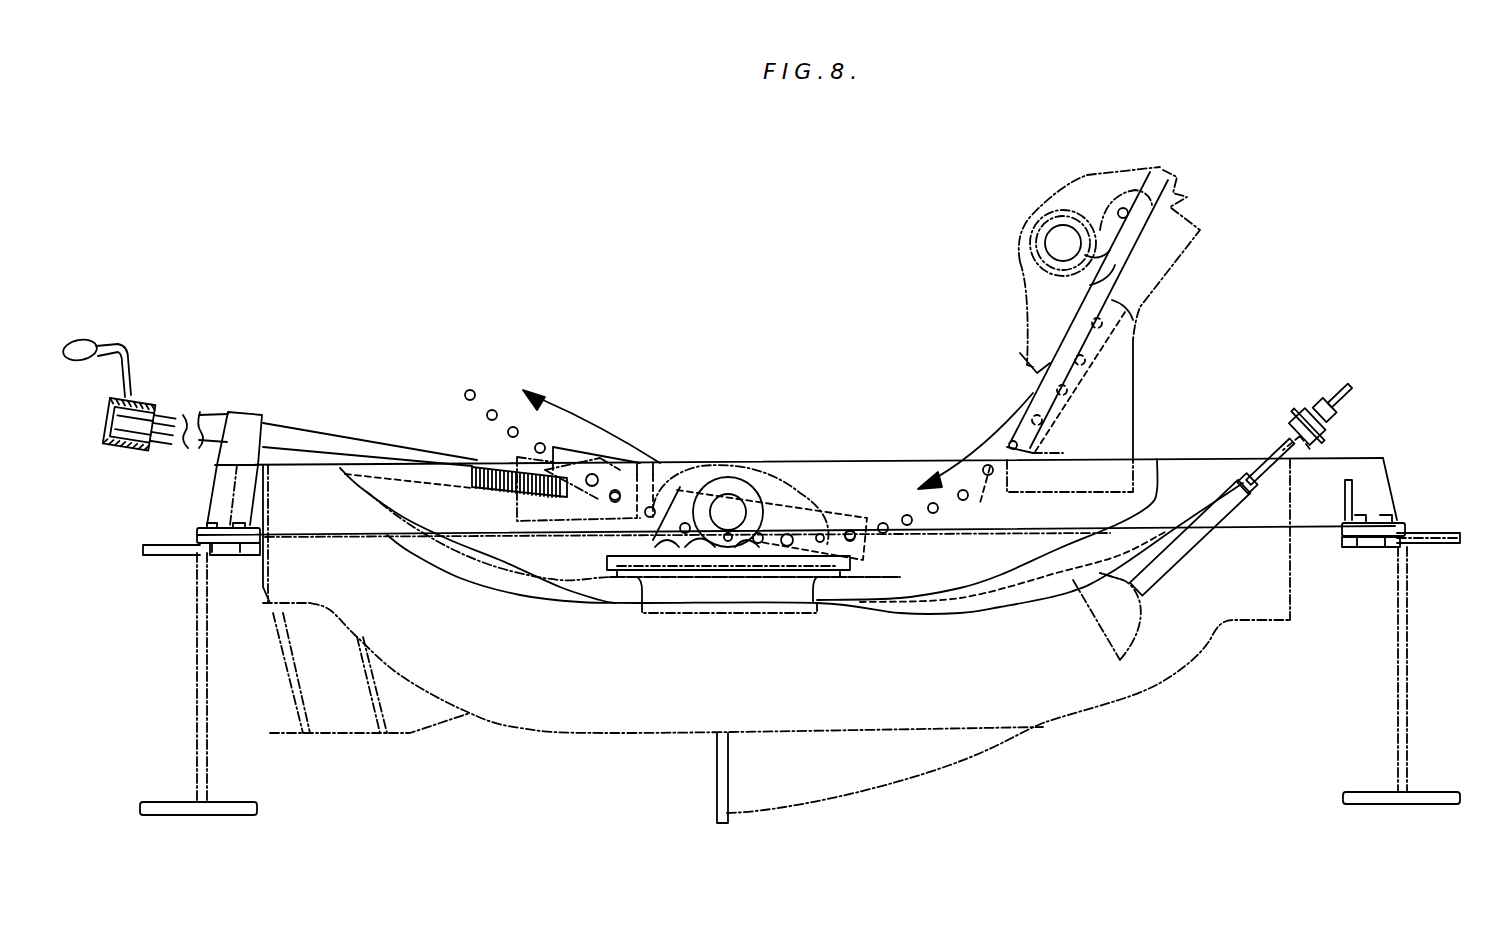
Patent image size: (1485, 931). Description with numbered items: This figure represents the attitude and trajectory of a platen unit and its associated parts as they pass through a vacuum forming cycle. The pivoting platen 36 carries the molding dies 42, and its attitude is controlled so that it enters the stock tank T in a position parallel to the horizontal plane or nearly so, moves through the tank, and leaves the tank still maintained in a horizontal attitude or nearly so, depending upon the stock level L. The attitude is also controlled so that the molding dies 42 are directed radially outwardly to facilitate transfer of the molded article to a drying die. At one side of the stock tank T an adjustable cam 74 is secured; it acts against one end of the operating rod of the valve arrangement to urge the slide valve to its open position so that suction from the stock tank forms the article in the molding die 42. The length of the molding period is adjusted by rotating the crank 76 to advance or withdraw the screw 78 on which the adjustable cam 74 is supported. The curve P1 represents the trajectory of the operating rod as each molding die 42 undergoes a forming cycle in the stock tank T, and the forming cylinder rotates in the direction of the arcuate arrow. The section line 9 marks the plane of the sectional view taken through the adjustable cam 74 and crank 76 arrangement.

The section line 9- 9 is at (383, 302).
The pivoting platen 36 is at (753, 497).
The molding die 42 is at (1168, 250).
The adjustable cam 74 is at (587, 470).
The crank 76 is at (100, 347).
The screw 78 is at (500, 463).
The stock level L is at (1005, 532).
The stock tank T is at (1112, 685).
The trajectory of the operating rod P1 is at (927, 510).